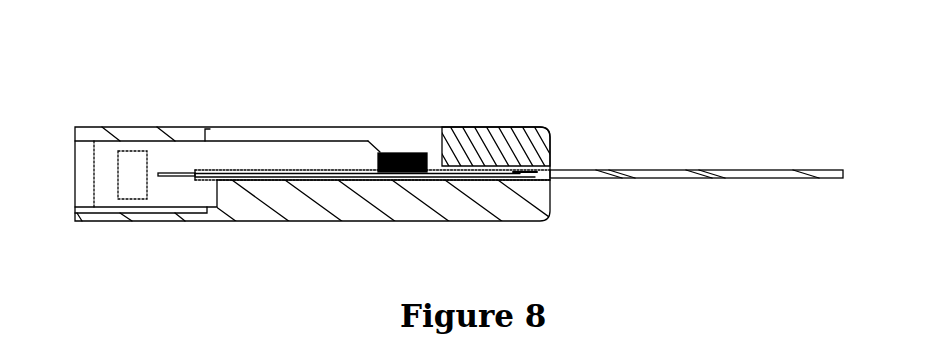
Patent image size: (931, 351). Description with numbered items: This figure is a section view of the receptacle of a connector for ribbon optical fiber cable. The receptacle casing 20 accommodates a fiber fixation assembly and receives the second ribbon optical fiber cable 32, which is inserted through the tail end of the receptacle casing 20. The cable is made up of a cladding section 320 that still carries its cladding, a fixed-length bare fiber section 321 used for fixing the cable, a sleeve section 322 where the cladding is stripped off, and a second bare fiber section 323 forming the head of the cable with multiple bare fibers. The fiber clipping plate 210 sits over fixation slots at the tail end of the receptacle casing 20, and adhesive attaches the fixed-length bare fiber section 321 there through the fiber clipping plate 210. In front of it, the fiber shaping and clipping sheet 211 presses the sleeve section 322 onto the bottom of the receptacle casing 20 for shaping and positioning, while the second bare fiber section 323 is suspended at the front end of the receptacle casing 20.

The receptacle casing 20 is at (395, 242).
The fiber clipping plate 210 is at (466, 140).
The fiber shaping and clipping sheet 211 is at (402, 153).
The second ribbon optical fiber cable 32 is at (471, 148).
The cladding section 320 is at (673, 178).
The fixed-length bare fiber section 321 is at (488, 176).
The sleeve section 322 is at (268, 171).
The second bare fiber section 323 is at (176, 174).